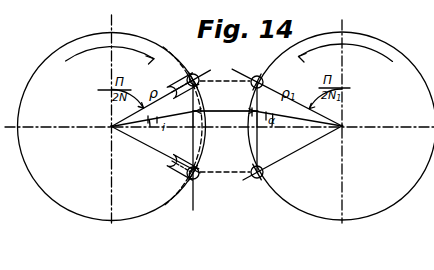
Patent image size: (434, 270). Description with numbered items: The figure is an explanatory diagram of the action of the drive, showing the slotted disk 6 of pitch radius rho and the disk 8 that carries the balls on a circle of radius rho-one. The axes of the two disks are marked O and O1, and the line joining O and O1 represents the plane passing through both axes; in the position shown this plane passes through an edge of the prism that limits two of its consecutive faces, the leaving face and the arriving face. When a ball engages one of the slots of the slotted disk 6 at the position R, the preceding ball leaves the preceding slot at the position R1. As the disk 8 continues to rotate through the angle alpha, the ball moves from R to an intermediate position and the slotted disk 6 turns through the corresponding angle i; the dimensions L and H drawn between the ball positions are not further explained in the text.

The slotted disk 6 is at (112, 127).
The disk 8 is at (341, 126).
The engagement position of ball R is at (215, 77).
The leaving position of ball R1 is at (215, 178).
The axis of slotted disk O is at (103, 136).
The axis of disk O1 is at (352, 138).
The distance between pin centers L is at (219, 105).
The height dimension H is at (224, 127).